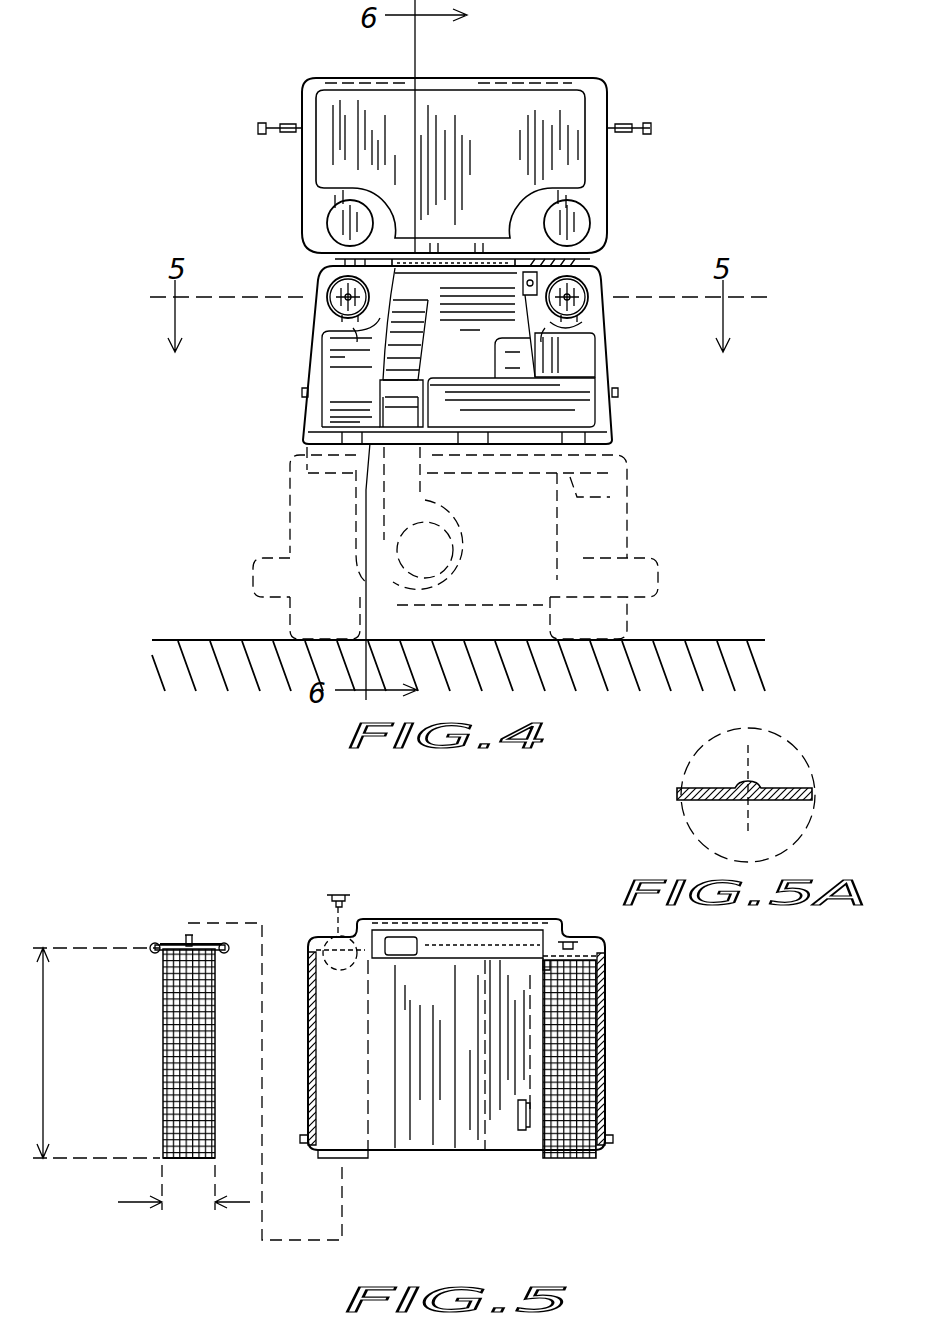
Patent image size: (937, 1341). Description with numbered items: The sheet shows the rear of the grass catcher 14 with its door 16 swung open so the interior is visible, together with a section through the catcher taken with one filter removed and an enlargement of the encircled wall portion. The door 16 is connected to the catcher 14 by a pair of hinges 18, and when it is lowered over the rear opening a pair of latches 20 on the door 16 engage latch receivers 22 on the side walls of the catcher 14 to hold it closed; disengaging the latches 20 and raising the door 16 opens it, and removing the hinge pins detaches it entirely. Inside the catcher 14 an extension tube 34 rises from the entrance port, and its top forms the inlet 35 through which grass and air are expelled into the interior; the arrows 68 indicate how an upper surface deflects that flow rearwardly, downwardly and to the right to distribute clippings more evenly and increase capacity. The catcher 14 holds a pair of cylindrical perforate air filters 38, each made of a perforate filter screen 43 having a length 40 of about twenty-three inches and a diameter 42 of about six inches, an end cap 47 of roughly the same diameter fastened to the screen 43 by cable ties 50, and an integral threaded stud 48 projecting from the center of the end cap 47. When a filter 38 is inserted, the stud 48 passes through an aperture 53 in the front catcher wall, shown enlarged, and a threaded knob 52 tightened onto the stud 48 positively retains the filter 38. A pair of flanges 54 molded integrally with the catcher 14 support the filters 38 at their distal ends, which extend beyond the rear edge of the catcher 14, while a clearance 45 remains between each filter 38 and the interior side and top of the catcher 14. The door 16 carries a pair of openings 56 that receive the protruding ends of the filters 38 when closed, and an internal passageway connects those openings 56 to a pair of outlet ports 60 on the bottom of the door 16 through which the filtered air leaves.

In FIG. 4, the grass catcher 14 is at (629, 373).
In FIG. 5, the grass catcher 14 is at (511, 905).
In FIG. 4, the door 16 is at (590, 95).
In FIG. 4, the hinges 18 is at (537, 259).
In FIG. 4, the latches 20 is at (258, 128).
In FIG. 4, the latch receivers 22 is at (300, 395).
In FIG. 5, the latch receivers 22 is at (300, 1146).
In FIG. 4, the extension tube 34 is at (398, 368).
In FIG. 4, the inlet 35 is at (417, 295).
In FIG. 4, the perforate air filters 38 is at (603, 285).
In FIG. 5, the perforate air filters 38 is at (577, 1165).
In FIG. 5, the length 40 is at (43, 1062).
In FIG. 5, the diameter 42 is at (125, 1202).
In FIG. 5, the filter screen 43 is at (160, 1118).
In FIG. 5, the clearance 45 is at (610, 1012).
In FIG. 5, the end cap 47 is at (168, 944).
In FIG. 5, the threaded stud 48 is at (185, 938).
In FIG. 5, the cable ties 50 is at (226, 944).
In FIG. 5, the threaded knob 52 is at (340, 892).
In FIG. 5A, the aperture 53 is at (750, 790).
In FIG. 4, the flanges 54 is at (552, 328).
In FIG. 4, the openings 56 is at (345, 222).
In FIG. 4, the outlet ports 60 is at (358, 82).
In FIG. 5, the arrows 68 is at (463, 989).